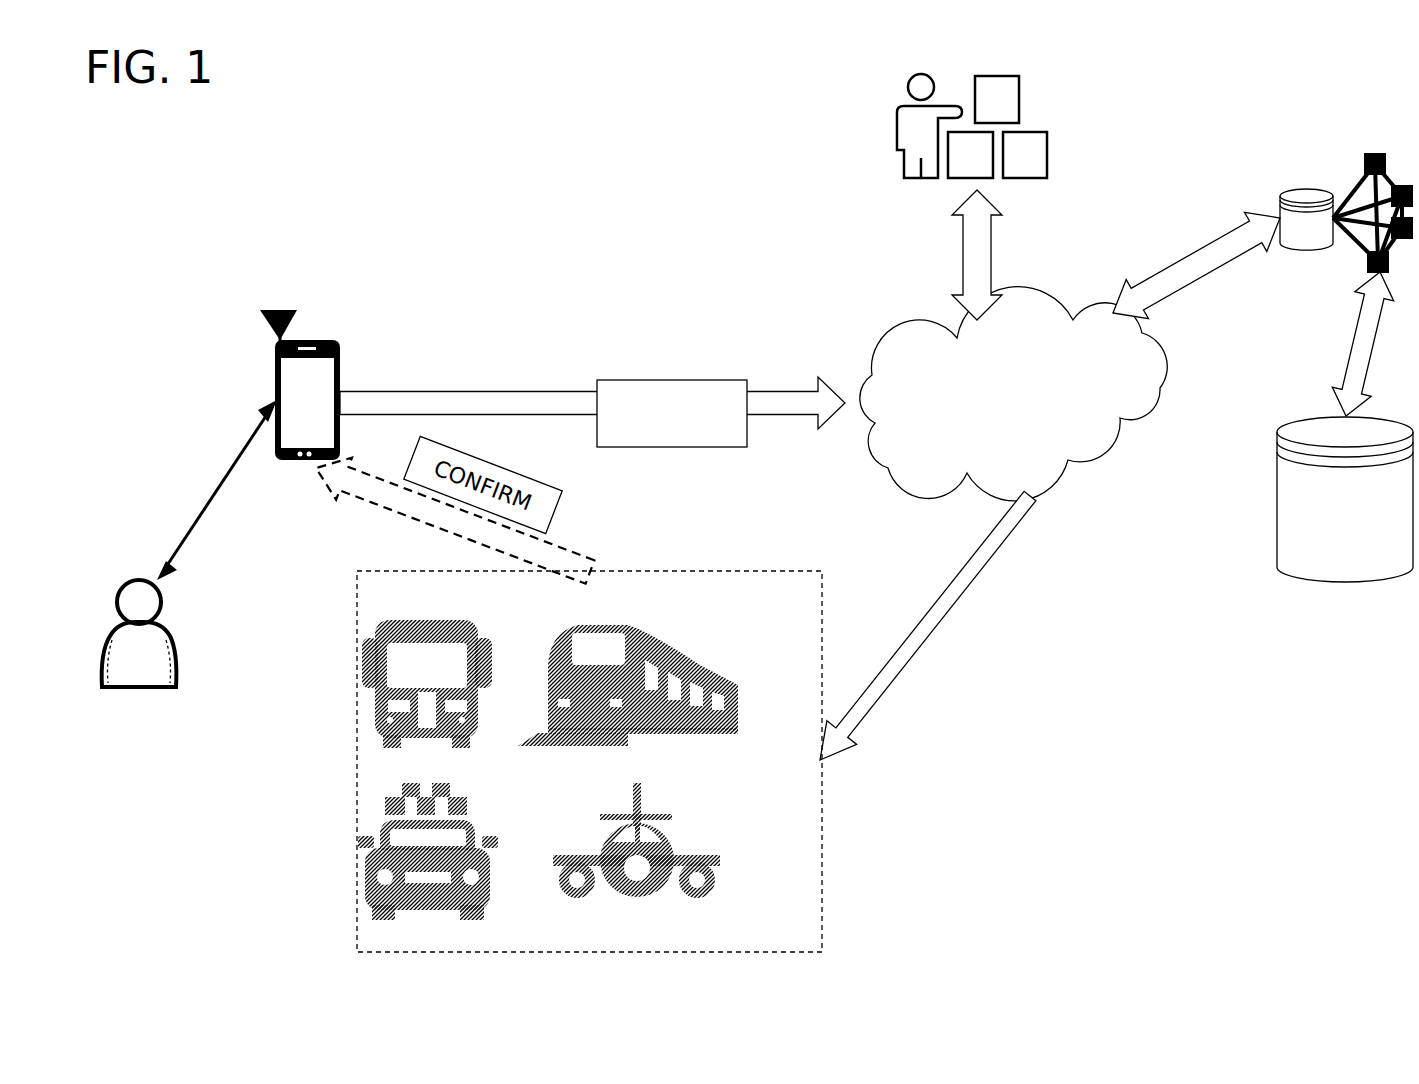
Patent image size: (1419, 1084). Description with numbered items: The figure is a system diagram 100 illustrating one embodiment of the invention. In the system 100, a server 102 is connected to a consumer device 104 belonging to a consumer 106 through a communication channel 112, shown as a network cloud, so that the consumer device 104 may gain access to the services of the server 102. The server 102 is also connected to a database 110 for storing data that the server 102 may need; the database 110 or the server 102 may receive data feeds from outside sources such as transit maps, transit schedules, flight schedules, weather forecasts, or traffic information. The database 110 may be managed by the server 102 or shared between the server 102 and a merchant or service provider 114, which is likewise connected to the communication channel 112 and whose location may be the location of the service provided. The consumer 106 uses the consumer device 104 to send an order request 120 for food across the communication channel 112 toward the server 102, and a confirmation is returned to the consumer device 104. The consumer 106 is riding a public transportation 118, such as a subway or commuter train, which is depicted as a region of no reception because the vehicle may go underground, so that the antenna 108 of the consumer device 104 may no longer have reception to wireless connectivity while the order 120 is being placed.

The system 100 is at (584, 106).
The server 102 is at (1328, 252).
The consumer device 104 is at (307, 400).
The consumer 106 is at (139, 633).
The antenna 108 is at (298, 308).
The database 110 is at (1345, 427).
The communication channel 112 is at (1013, 394).
The merchant or service provider 114 is at (1040, 168).
The public transportation 118 is at (822, 598).
The order request 120 is at (733, 447).